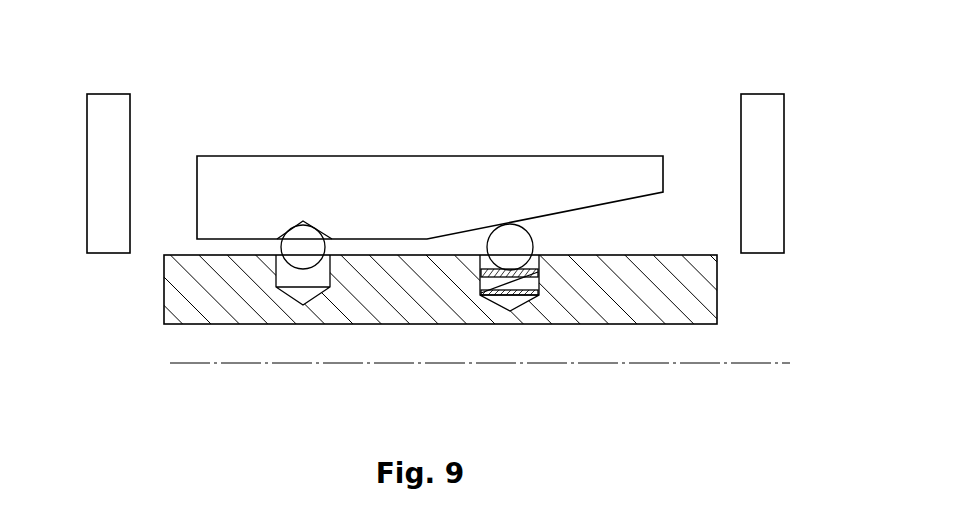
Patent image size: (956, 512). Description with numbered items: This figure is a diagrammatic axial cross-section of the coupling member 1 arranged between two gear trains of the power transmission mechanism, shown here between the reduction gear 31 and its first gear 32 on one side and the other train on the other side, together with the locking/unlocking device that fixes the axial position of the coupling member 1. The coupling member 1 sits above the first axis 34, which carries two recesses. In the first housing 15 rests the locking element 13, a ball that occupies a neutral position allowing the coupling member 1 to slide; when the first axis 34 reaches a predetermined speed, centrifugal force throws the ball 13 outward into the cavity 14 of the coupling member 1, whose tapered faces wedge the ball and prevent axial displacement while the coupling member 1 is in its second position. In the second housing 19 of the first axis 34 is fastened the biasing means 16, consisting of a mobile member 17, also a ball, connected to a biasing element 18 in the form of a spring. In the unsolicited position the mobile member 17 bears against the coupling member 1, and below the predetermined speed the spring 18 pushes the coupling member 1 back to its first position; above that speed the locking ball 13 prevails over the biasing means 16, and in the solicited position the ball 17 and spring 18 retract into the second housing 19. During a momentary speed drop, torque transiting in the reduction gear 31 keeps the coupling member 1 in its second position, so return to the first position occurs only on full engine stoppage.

The coupling member 1 is at (233, 190).
The locking element 13 is at (315, 262).
The cavity 14 is at (285, 232).
The first housing 15 is at (297, 284).
The biasing means 16 is at (548, 276).
The mobile member 17 is at (527, 230).
The biasing element 18 is at (522, 298).
The second housing 19 is at (503, 302).
The reduction gear 31 is at (105, 115).
The first gear 32 is at (761, 112).
The first axis 34 is at (700, 312).